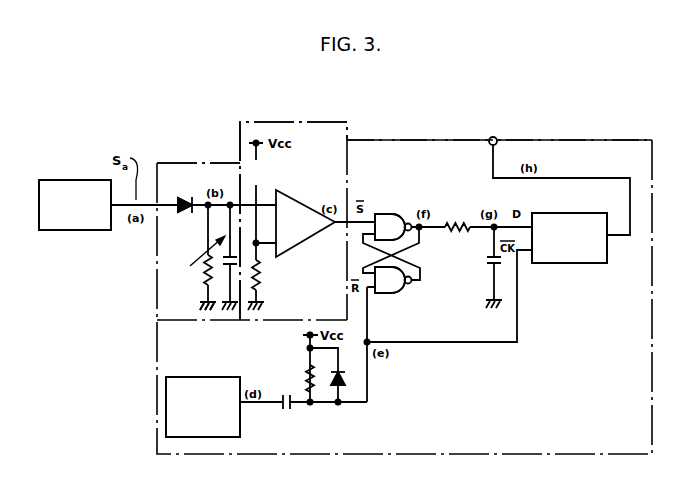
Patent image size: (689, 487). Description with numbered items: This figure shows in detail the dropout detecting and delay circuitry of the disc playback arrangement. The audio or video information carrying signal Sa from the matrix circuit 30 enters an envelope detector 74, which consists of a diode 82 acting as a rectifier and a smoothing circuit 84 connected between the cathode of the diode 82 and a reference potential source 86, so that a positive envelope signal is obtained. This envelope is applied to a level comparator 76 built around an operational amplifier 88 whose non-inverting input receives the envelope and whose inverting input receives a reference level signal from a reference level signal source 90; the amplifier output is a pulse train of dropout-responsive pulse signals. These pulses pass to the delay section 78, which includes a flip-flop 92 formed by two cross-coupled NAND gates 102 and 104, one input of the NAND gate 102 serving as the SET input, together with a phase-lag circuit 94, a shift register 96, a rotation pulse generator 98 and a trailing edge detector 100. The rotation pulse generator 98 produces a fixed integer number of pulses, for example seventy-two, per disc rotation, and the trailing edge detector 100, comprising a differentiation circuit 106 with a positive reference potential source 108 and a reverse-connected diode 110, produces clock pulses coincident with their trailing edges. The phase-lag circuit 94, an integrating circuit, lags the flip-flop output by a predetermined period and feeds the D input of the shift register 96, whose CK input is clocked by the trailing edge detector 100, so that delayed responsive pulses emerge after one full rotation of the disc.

The matrix circuit 30 is at (95, 231).
The envelope detector 74 is at (168, 162).
The level comparator 76 is at (300, 121).
The delay section 78 is at (435, 140).
The diode 82 is at (186, 213).
The smoothing circuit 84 is at (199, 260).
The reference potential source 86 is at (204, 302).
The operational amplifier 88 is at (318, 192).
The reference level signal source 90 is at (262, 283).
The flip-flop 92 is at (413, 261).
The phase-lag circuit 94 is at (481, 240).
The shift register 96 is at (560, 263).
The rotation pulse generator 98 is at (231, 437).
The trailing edge detector 100 is at (300, 381).
The NAND gate 102 is at (400, 214).
The NAND gate 104 is at (386, 293).
The differentiation circuit 106 is at (319, 389).
The positive reference potential source 108 is at (305, 335).
The diode 110 is at (346, 376).